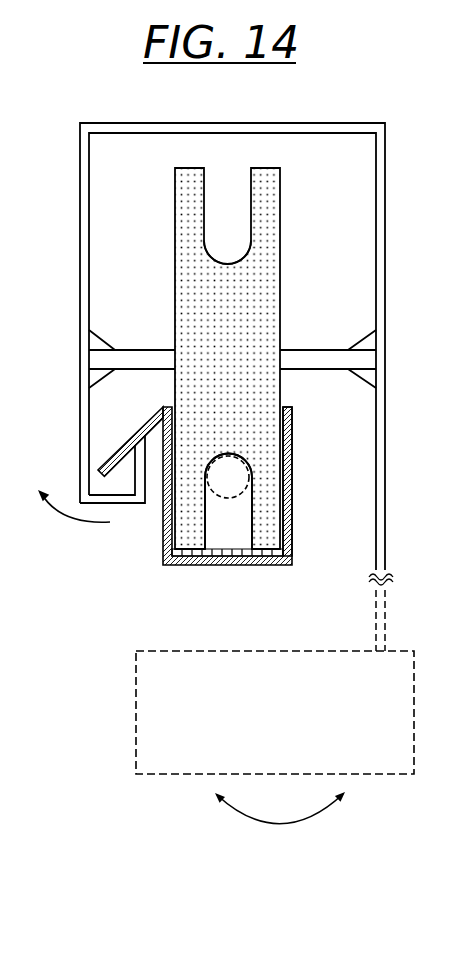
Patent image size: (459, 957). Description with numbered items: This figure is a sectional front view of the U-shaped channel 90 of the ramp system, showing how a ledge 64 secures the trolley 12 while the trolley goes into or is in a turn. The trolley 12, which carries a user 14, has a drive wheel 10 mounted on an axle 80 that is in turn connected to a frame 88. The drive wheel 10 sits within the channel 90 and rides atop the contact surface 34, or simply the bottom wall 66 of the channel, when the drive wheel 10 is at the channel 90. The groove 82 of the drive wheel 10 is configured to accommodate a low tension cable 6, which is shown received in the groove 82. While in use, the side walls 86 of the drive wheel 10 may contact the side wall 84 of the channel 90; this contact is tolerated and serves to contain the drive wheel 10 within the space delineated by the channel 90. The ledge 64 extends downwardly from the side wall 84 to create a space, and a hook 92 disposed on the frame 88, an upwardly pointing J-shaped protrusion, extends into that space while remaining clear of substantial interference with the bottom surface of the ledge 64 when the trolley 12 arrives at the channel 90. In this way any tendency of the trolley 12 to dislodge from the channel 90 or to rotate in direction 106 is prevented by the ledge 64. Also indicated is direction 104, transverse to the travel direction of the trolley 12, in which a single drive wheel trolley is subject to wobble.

The low tension cable 6 is at (248, 478).
The drive wheel 10 is at (227, 358).
The trolley 12 is at (223, 712).
The user 14 is at (136, 706).
The contact surface 34 is at (270, 542).
The ledge 64 is at (153, 418).
The bottom wall 66 is at (190, 533).
The axle 80 is at (307, 349).
The groove 82 is at (224, 263).
The side wall 84 is at (293, 445).
The side walls 86 is at (227, 358).
The frame 88 is at (229, 123).
The U-shaped channel 90 is at (250, 505).
The hook 92 is at (121, 466).
The direction transverse to the travel direction 104 is at (310, 821).
The direction of rotation 106 is at (55, 514).